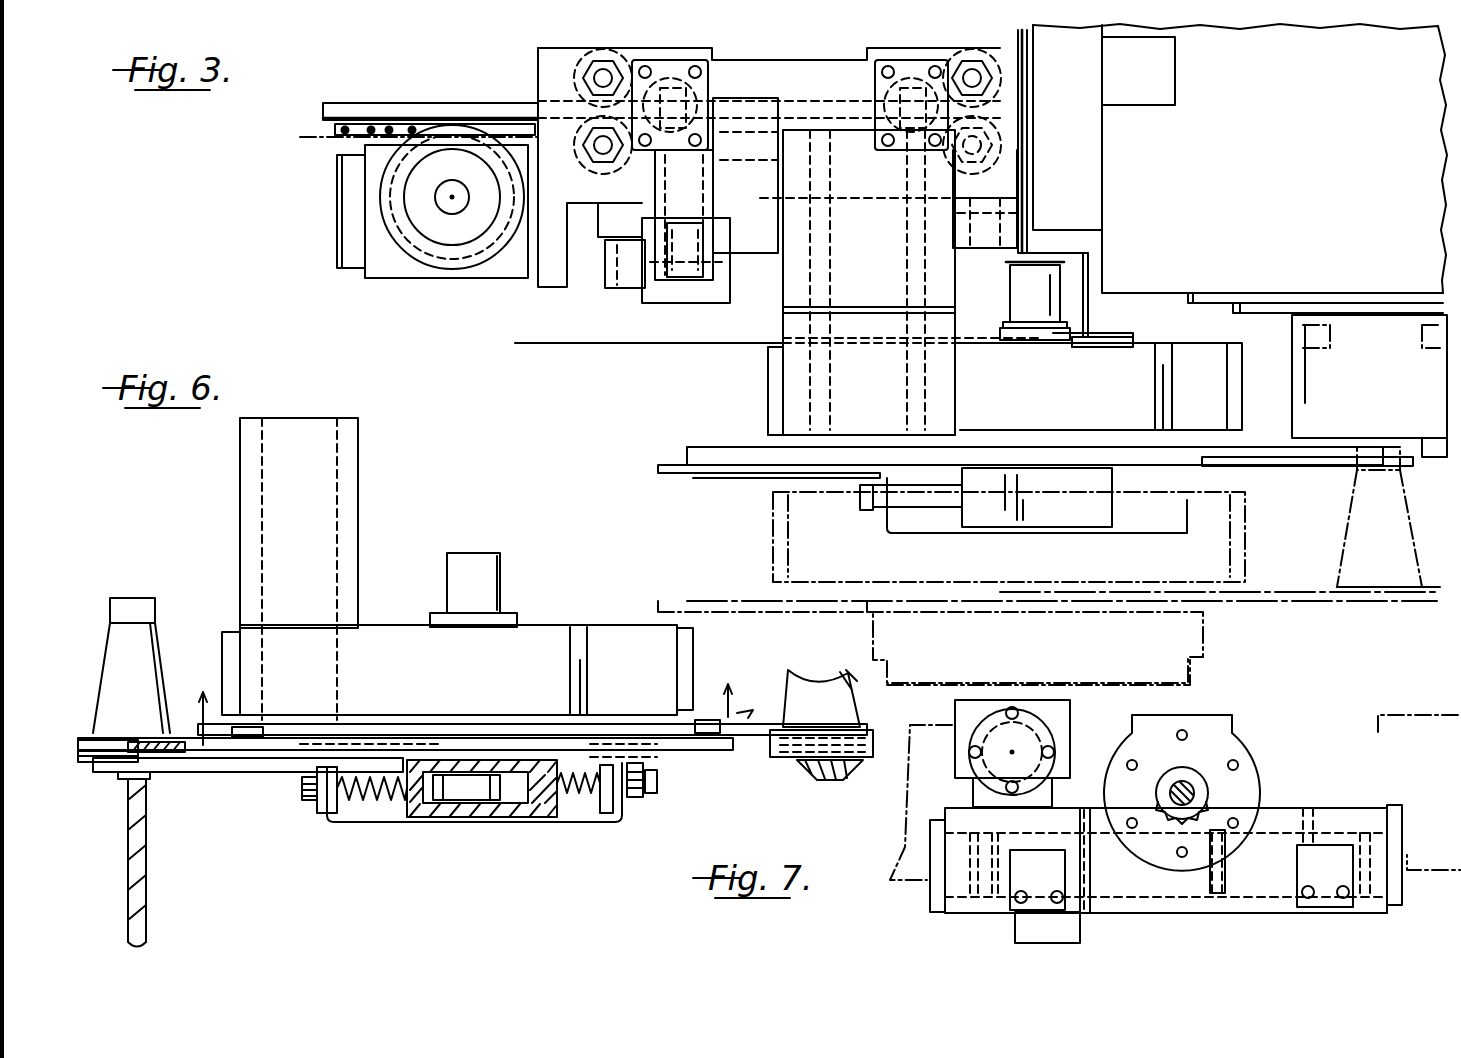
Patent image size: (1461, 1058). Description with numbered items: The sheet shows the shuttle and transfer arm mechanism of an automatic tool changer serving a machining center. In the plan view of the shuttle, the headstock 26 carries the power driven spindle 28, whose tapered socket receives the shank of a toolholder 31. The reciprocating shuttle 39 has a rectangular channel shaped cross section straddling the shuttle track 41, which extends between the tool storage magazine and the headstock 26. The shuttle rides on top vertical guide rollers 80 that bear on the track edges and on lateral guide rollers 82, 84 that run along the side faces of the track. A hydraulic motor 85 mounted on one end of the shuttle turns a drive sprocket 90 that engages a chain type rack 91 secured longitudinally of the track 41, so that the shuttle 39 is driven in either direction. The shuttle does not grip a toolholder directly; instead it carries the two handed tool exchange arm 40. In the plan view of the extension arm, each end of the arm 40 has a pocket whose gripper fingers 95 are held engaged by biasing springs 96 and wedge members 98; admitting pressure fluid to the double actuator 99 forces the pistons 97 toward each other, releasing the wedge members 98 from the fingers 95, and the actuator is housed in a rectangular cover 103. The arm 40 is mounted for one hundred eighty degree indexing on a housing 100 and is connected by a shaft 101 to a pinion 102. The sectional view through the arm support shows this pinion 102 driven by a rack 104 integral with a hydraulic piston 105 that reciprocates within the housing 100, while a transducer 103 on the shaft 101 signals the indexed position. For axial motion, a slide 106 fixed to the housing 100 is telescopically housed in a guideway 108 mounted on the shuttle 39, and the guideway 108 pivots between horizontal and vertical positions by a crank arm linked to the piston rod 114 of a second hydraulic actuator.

In FIG. 3, the headstock 26 is at (1240, 168).
In FIG. 3, the spindle 28 is at (1369, 386).
In FIG. 3, the toolholder 31 is at (1405, 525).
In FIG. 6, the toolholder 31 is at (162, 650).
In FIG. 3, the reciprocating shuttle 39 is at (538, 80).
In FIG. 3, the tool exchange arm 40 is at (777, 480).
In FIG. 6, the tool exchange arm 40 is at (699, 743).
In FIG. 3, the shuttle track 41 is at (377, 113).
In FIG. 3, the top vertical guide roller 80 is at (708, 95).
In FIG. 3, the lateral guide roller 82 is at (586, 152).
In FIG. 3, the lateral guide roller 84 is at (618, 54).
In FIG. 3, the hydraulic motor 85 is at (390, 270).
In FIG. 3, the drive sprocket 90 is at (453, 268).
In FIG. 3, the chain type rack 91 is at (340, 140).
In FIG. 6, the gripper finger 95 is at (215, 753).
In FIG. 6, the biasing spring 96 is at (352, 790).
In FIG. 6, the piston 97 is at (437, 820).
In FIG. 6, the wedge member 98 is at (320, 803).
In FIG. 3, the double actuator 99 is at (1045, 518).
In FIG. 6, the double actuator 99 is at (460, 812).
In FIG. 6, the housing 100 is at (628, 602).
In FIG. 7, the housing 100 is at (1265, 812).
In FIG. 6, the shaft 101 is at (480, 697).
In FIG. 7, the shaft 101 is at (1184, 786).
In FIG. 6, the pinion 102 is at (485, 740).
In FIG. 7, the pinion 102 is at (1198, 816).
In FIG. 3, the rectangular cover 103 is at (1020, 285).
In FIG. 6, the rectangular cover 103 is at (470, 558).
In FIG. 7, the rack 104 is at (1052, 835).
In FIG. 7, the hydraulic piston 105 is at (1120, 890).
In FIG. 6, the slide 106 is at (353, 492).
In FIG. 7, the slide 106 is at (1068, 714).
In FIG. 3, the guideway 108 is at (793, 388).
In FIG. 3, the piston rod 114 is at (680, 285).